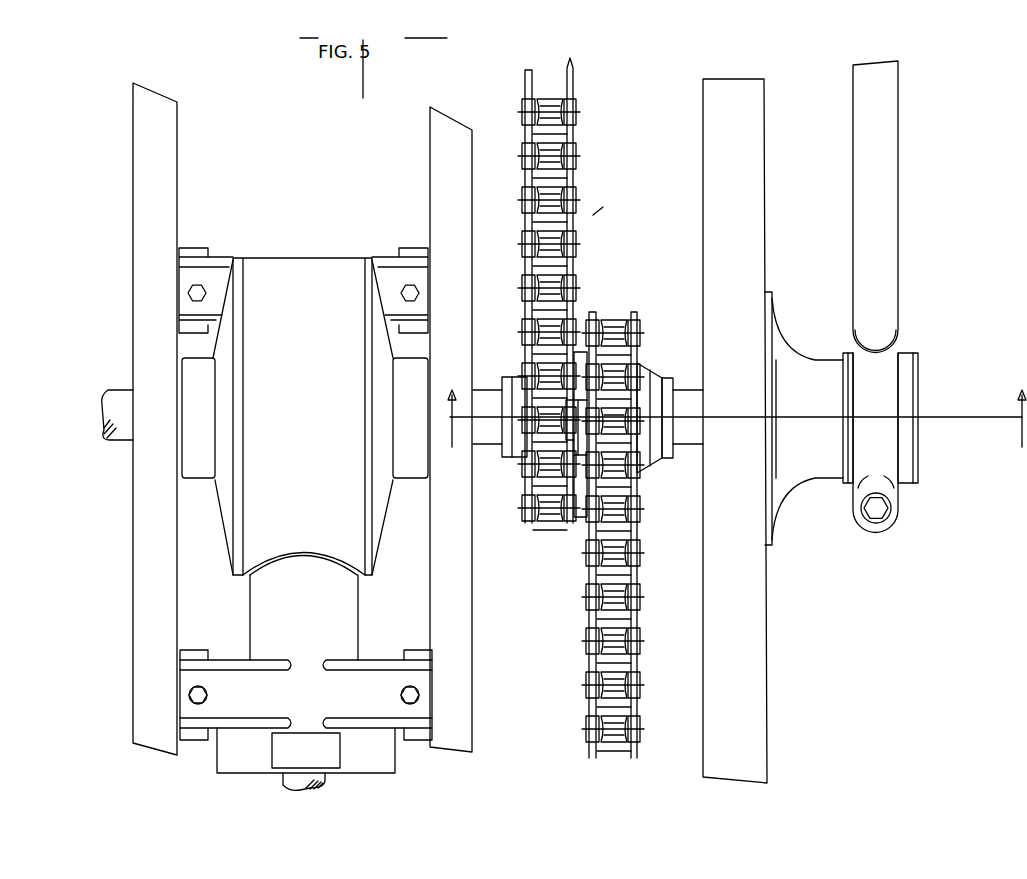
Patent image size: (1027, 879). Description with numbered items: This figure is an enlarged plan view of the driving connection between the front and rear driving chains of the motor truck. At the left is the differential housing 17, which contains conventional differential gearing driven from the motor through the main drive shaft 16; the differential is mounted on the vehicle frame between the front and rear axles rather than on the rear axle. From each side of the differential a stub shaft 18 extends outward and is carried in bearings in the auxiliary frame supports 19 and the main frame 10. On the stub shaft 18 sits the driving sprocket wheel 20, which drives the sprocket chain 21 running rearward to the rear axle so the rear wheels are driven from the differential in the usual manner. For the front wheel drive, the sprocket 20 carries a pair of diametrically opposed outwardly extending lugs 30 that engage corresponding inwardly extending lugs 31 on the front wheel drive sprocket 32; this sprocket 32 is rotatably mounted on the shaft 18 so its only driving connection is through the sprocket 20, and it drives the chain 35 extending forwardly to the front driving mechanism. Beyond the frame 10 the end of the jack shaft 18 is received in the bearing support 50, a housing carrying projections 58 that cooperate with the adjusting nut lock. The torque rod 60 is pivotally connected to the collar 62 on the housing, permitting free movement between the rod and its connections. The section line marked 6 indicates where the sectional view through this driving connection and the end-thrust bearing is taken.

The section line 6- 6 is at (737, 426).
The frame 10 is at (755, 178).
The main drive shaft 16 is at (287, 780).
The differential housing 17 is at (278, 276).
The stub shaft 18 is at (488, 400).
The auxiliary frame support 19 is at (138, 335).
The driving sprocket wheel 20 is at (522, 377).
The sprocket chain 21 is at (570, 115).
The outwardly extending lug 30 is at (587, 482).
The inwardly extending lug 31 is at (583, 355).
The front wheel drive sprocket 32 is at (645, 373).
The chain 35 is at (580, 602).
The bearing support 50 is at (813, 373).
The projection 58 is at (918, 362).
The torque rod 60 is at (893, 213).
The collar 62 is at (888, 477).